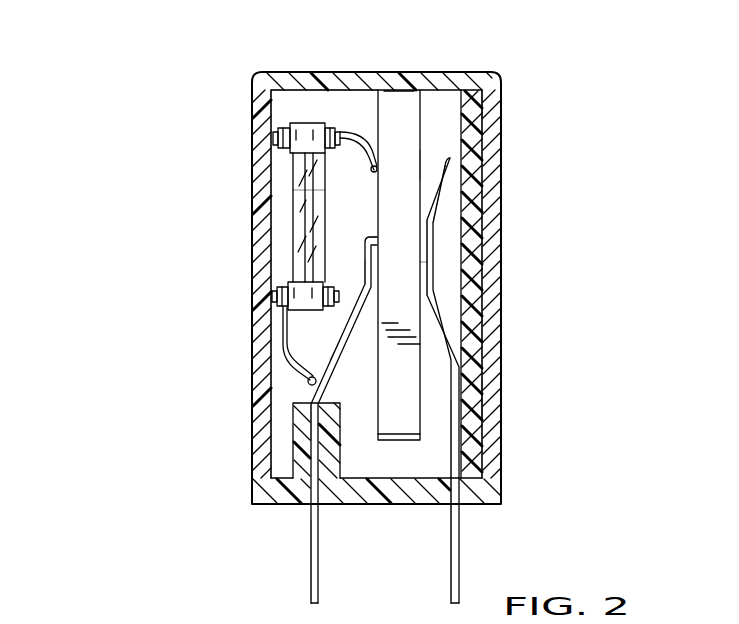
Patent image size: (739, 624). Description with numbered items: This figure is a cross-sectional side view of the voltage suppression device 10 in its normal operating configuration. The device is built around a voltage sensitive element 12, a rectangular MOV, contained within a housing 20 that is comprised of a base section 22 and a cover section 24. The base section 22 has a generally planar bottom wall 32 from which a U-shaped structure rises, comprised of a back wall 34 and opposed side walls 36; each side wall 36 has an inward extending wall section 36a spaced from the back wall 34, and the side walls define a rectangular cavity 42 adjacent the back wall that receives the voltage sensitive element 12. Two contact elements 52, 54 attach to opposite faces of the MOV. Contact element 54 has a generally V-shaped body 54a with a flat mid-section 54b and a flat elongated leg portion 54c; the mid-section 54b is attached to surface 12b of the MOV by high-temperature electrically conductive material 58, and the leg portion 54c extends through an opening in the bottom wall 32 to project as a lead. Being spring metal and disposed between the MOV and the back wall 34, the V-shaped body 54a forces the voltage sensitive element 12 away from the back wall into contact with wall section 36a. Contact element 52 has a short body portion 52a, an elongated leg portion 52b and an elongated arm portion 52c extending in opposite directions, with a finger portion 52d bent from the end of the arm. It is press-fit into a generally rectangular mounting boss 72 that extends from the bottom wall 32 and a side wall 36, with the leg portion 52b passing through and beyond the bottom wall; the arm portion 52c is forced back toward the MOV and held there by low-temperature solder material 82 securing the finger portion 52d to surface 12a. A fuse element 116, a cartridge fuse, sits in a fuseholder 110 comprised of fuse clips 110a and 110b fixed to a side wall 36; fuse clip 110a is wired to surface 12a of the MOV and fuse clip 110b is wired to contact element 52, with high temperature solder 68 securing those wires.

The voltage suppression device 10 is at (185, 90).
The voltage sensitive element 12 is at (437, 120).
The surface of MOV 12a is at (300, 200).
The surface of MOV 12b is at (460, 166).
The housing 20 is at (518, 85).
The base section 22 is at (484, 402).
The cover section 24 is at (502, 343).
The bottom wall portion 32 is at (393, 493).
The back wall 34 is at (472, 170).
The side walls 36 is at (290, 107).
The inward extending wall section 36a is at (370, 110).
The cavity 42 is at (474, 92).
The contact element 52 is at (336, 333).
The body portion 52a is at (312, 433).
The leg portion 52b is at (308, 537).
The arm portion 52c is at (332, 354).
The finger portion 52d is at (369, 265).
The contact element 54 is at (440, 304).
The V-shaped body 54a is at (450, 216).
The mid-section 54b is at (434, 260).
The leg portion 54c is at (456, 429).
The electrically conductive material 58 is at (423, 270).
The high temperature solder 68 is at (175, 402).
The mounting boss 72 is at (295, 445).
The solder material 82 is at (364, 255).
The fuseholder 110 is at (205, 209).
The fuse clip 110a is at (276, 142).
The fuse clip 110b is at (280, 297).
The fuse element 116 is at (291, 183).